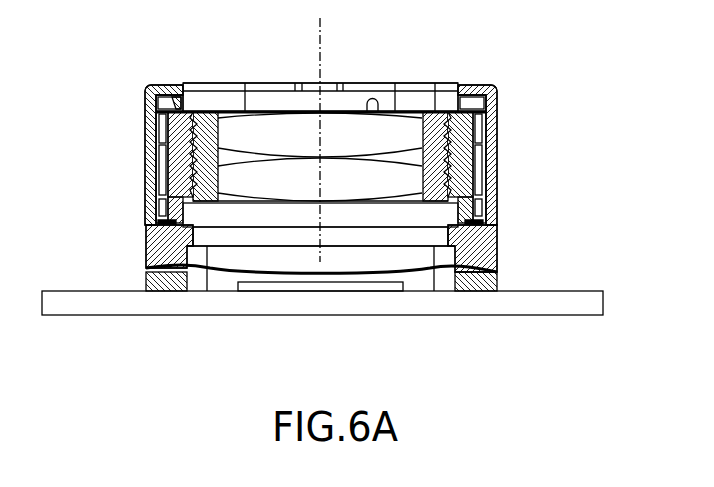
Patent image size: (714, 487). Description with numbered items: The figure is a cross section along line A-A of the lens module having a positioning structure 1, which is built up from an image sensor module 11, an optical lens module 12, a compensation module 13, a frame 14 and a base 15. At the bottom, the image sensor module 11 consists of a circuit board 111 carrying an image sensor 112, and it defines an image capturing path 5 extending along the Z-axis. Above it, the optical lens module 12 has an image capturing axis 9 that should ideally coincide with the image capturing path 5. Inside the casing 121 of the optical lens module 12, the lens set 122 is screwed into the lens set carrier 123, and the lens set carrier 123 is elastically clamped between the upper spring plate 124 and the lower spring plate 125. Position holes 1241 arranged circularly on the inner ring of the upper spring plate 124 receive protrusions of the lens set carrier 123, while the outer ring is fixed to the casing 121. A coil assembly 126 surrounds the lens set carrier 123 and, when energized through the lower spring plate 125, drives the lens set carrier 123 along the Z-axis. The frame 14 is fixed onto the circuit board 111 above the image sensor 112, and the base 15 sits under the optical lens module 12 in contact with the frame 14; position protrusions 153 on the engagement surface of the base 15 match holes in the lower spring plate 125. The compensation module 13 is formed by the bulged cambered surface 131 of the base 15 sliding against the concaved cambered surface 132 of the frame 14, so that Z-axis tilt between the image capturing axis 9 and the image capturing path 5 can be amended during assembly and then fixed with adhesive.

The lens module having a positioning structure 1 is at (122, 62).
The image capturing axis 9 is at (323, 60).
The image sensor module 11 is at (322, 339).
The circuit board 111 is at (374, 308).
The image sensor 112 is at (388, 290).
The optical lens module 12 is at (328, 126).
The casing 121 is at (451, 112).
The lens set 122 is at (432, 110).
The lens set carrier 123 is at (471, 131).
The upper spring plate 124 is at (492, 96).
The position holes 1241 is at (155, 85).
The lower spring plate 125 is at (481, 214).
The coil assembly 126 is at (479, 160).
The compensation module 13 is at (104, 253).
The bulged cambered surface 131 is at (150, 247).
The concaved cambered surface 132 is at (148, 278).
The frame 14 is at (498, 272).
The base 15 is at (498, 236).
The position protrusions 153 is at (163, 222).
The image capturing path 5 is at (320, 260).